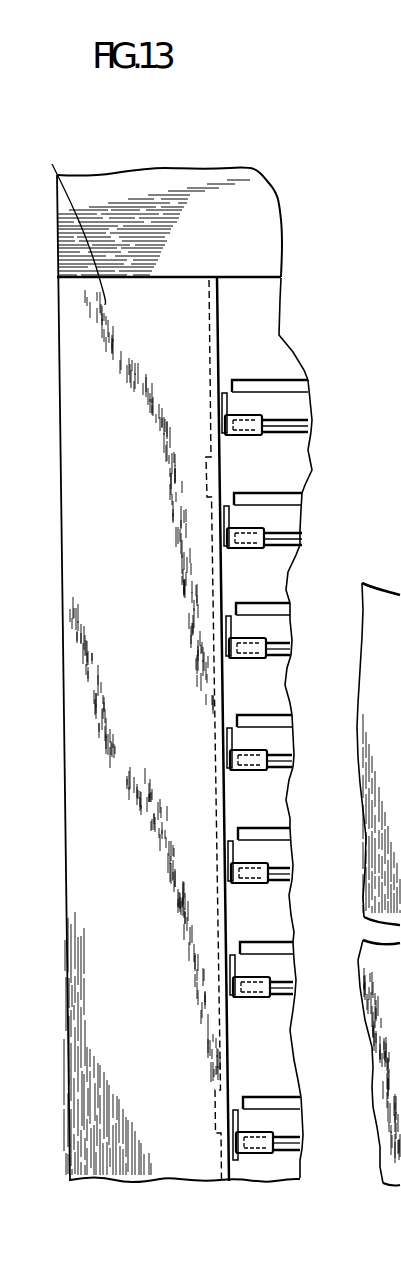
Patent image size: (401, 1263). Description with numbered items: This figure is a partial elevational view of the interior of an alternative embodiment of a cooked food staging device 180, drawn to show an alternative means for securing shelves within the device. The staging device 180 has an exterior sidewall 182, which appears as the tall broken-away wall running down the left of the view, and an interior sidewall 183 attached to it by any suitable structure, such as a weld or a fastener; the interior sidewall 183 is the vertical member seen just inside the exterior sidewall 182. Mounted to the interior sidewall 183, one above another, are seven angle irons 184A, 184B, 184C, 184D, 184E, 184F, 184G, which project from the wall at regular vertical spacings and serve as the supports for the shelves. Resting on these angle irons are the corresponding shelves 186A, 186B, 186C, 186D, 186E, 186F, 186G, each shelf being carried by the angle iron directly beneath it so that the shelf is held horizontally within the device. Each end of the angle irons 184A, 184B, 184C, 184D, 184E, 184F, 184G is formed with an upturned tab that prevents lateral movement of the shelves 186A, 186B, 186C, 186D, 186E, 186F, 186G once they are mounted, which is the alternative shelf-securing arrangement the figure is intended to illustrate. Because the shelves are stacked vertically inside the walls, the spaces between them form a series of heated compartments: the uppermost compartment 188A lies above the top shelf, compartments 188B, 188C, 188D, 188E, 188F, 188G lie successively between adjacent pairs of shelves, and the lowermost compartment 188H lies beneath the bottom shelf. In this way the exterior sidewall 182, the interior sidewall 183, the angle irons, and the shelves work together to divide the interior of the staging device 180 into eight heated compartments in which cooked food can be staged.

The staging device 180 is at (147, 166).
The exterior sidewall 182 is at (126, 661).
The interior sidewall 183 is at (225, 378).
The angle iron 184A is at (234, 428).
The angle iron 184B is at (236, 540).
The angle iron 184C is at (238, 652).
The angle iron 184D is at (239, 763).
The angle iron 184E is at (240, 877).
The angle iron 184F is at (243, 987).
The angle iron 184G is at (245, 1143).
The shelf 186A is at (316, 400).
The shelf 186B is at (308, 515).
The shelf 186C is at (328, 617).
The shelf 186D is at (323, 723).
The shelf 186E is at (302, 850).
The shelf 186F is at (303, 963).
The shelf 186G is at (311, 1122).
The heated compartment 188A is at (272, 335).
The heated compartment 188B is at (298, 458).
The heated compartment 188C is at (274, 578).
The heated compartment 188D is at (270, 680).
The heated compartment 188E is at (275, 800).
The heated compartment 188F is at (283, 900).
The heated compartment 188G is at (273, 1047).
The heated compartment 188H is at (283, 1170).